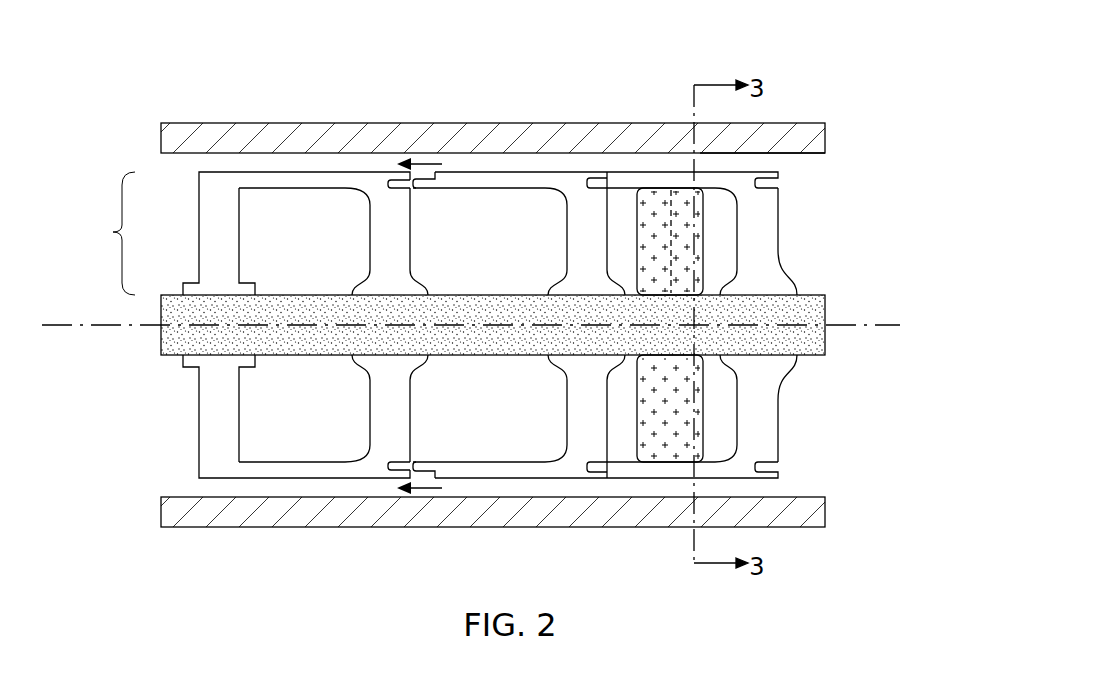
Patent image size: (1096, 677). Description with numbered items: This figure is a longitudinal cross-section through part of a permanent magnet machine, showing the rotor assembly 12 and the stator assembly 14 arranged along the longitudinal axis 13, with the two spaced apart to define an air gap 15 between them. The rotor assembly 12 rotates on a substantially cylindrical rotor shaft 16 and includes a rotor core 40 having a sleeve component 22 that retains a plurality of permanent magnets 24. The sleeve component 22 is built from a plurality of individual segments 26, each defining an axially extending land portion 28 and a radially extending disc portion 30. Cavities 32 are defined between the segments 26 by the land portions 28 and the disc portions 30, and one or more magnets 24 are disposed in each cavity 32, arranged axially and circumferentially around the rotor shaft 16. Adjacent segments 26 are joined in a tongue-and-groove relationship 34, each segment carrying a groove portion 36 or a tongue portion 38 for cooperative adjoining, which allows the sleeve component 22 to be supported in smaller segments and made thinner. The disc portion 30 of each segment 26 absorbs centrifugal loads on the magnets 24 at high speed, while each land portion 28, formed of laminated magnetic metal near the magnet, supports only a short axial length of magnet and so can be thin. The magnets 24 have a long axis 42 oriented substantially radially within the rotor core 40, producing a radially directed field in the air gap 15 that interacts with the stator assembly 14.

The rotor assembly 12 is at (243, 103).
The longitudinal axis 13 is at (878, 330).
The stator assembly 14 is at (800, 122).
The air gap 15 is at (781, 162).
The rotor shaft 16 is at (172, 333).
The sleeve component 22 is at (217, 212).
The permanent magnets 24 is at (645, 212).
The individual segments 26 is at (320, 171).
The land portion 28 is at (272, 189).
The disc portion 30 is at (380, 256).
The cavities 32 is at (309, 229).
The tongue-and-groove relationship 34 is at (607, 172).
The groove portion 36 is at (398, 468).
The tongue portion 38 is at (422, 467).
The rotor core 40 is at (112, 232).
The long axis 42 is at (671, 250).